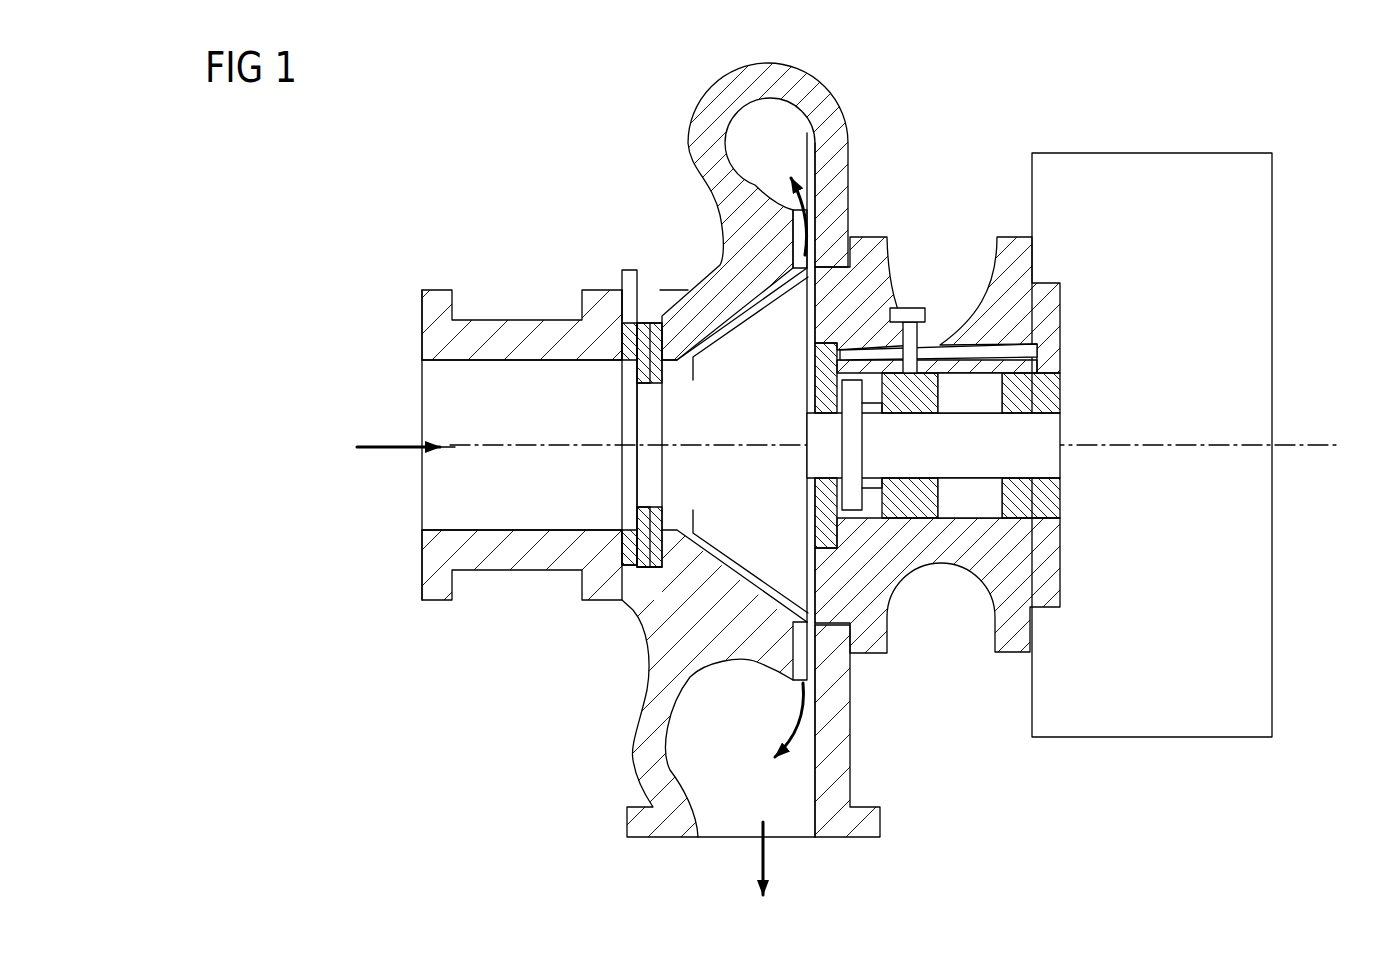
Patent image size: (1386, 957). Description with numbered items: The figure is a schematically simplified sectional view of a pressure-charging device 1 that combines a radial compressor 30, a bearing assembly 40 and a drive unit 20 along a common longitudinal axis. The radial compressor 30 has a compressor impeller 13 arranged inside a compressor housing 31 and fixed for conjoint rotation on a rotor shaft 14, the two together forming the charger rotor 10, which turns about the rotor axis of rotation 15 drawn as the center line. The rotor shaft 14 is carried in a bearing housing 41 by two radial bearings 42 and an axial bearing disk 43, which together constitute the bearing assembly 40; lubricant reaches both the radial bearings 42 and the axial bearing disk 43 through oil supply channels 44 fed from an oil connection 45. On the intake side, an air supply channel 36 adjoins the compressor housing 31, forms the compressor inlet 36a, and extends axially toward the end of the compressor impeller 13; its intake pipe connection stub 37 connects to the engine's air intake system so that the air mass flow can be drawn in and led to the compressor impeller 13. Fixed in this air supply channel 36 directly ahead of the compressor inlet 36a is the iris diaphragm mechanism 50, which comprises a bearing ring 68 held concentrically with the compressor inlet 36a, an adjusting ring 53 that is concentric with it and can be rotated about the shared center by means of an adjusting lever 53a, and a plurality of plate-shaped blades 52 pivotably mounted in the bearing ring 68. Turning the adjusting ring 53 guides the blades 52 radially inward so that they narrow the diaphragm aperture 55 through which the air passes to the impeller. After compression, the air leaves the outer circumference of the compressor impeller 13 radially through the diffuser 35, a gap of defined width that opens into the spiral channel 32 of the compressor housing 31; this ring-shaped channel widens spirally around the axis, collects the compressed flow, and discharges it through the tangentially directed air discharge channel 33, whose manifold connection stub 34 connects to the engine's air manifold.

The pressure-charging device 1 is at (1017, 68).
The charger rotor 10 is at (660, 474).
The compressor impeller 13 is at (737, 345).
The rotor shaft 14 is at (967, 463).
The rotor axis of rotation 15 is at (1330, 452).
The drive unit 20 is at (1190, 739).
The radial compressor 30 is at (540, 728).
The compressor housing 31 is at (673, 633).
The spiral channel 32 is at (732, 140).
The air discharge channel 33 is at (722, 822).
The manifold connection stub 34 is at (643, 822).
The diffuser 35 is at (807, 217).
The air supply channel 36 is at (513, 383).
The compressor inlet 36a is at (622, 422).
The intake pipe connection stub 37 is at (435, 342).
The bearing assembly 40 is at (933, 511).
The bearing housing 41 is at (868, 553).
The radial bearings 42 is at (1023, 393).
The axial bearing disk 43 is at (830, 347).
The oil supply channels 44 is at (937, 350).
The oil connection 45 is at (923, 307).
The iris diaphragm mechanism 50 is at (602, 392).
The blades 52 is at (630, 283).
The adjusting ring 53 is at (632, 560).
The adjusting lever 53a is at (618, 300).
The diaphragm aperture 55 is at (642, 490).
The bearing ring 68 is at (657, 558).